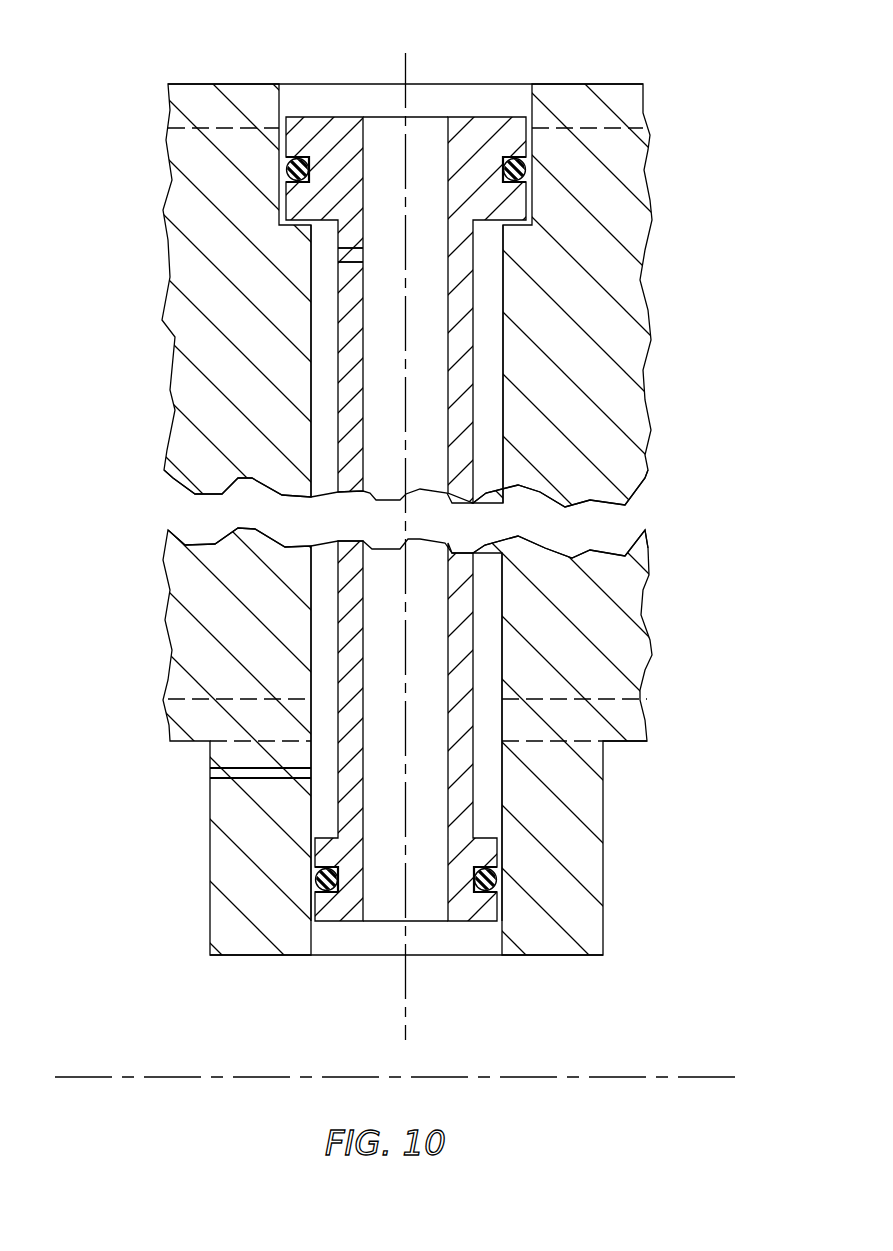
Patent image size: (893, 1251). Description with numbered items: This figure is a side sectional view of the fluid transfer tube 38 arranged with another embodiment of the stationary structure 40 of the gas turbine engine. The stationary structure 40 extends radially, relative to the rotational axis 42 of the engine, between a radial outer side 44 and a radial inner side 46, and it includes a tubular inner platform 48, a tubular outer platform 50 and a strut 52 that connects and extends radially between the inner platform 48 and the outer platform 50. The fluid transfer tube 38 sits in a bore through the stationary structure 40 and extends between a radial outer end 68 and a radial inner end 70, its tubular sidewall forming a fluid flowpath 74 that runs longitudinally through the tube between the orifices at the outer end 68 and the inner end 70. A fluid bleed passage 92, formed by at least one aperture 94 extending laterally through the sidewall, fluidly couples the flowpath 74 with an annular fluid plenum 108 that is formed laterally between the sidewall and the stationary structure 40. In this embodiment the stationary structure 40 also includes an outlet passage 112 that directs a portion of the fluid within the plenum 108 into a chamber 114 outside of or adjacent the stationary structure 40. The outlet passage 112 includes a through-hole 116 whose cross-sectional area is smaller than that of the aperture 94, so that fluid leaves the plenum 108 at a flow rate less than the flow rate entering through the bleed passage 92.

The fluid transfer tube 38 is at (375, 517).
The stationary structure 40 is at (648, 90).
The rotational axis 42 is at (725, 1075).
The radial outer side 44 is at (610, 83).
The radial inner side 46 is at (572, 956).
The inner platform 48 is at (648, 722).
The outer platform 50 is at (643, 113).
The strut 52 is at (643, 615).
The radial outer end 68 is at (315, 117).
The radial inner end 70 is at (466, 925).
The fluid flowpath 74 is at (423, 150).
The fluid bleed passage 92 is at (338, 252).
The aperture 94 is at (350, 255).
The annular fluid plenum 108 is at (484, 398).
The outlet passage 112 is at (260, 773).
The chamber 114 is at (138, 899).
The through-hole 116 is at (210, 772).